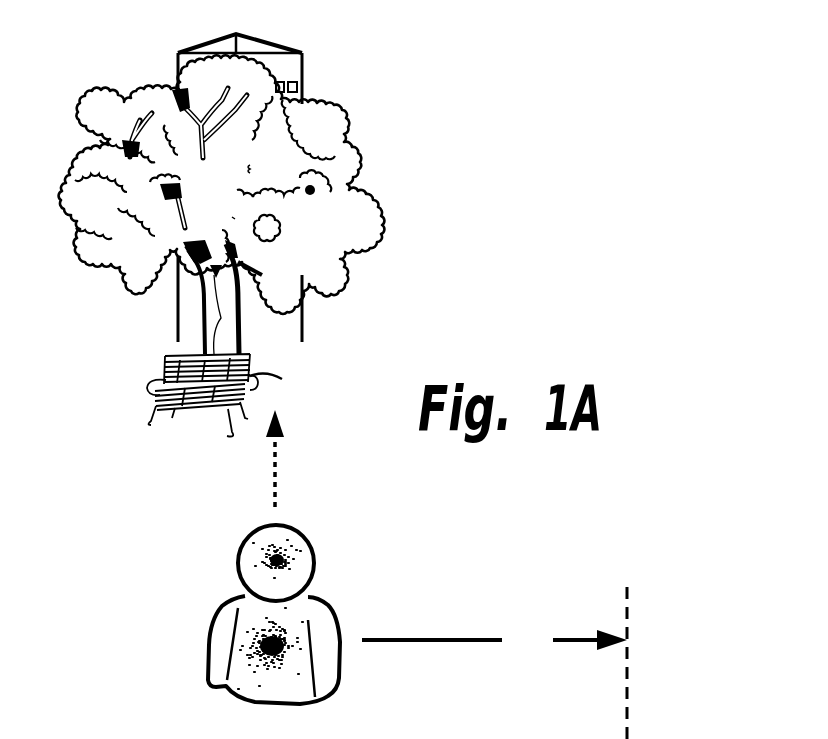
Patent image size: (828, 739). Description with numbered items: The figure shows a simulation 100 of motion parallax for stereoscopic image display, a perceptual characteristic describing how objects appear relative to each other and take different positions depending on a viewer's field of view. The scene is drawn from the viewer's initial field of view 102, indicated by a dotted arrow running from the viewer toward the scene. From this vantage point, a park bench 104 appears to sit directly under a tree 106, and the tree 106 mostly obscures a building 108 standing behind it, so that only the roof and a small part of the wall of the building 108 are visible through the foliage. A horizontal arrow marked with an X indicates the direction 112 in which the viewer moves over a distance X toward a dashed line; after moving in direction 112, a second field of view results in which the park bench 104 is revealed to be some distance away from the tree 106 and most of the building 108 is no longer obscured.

The simulation 100 is at (637, 196).
The field of view 102 is at (273, 456).
The park bench 104 is at (152, 374).
The tree 106 is at (352, 160).
The building 108 is at (307, 88).
The direction 112 is at (510, 613).